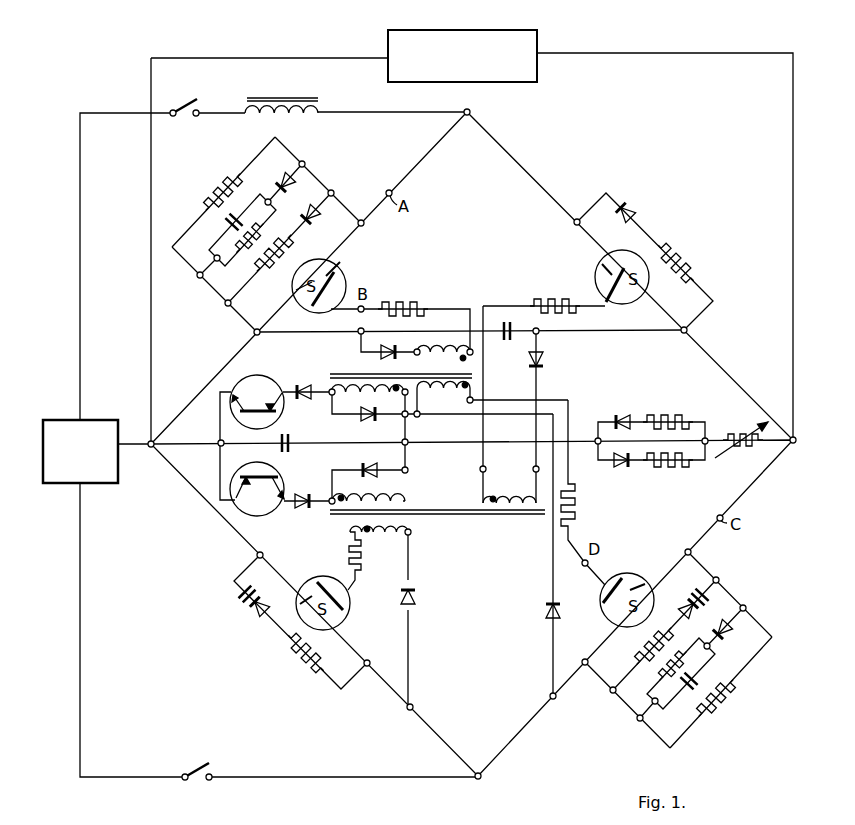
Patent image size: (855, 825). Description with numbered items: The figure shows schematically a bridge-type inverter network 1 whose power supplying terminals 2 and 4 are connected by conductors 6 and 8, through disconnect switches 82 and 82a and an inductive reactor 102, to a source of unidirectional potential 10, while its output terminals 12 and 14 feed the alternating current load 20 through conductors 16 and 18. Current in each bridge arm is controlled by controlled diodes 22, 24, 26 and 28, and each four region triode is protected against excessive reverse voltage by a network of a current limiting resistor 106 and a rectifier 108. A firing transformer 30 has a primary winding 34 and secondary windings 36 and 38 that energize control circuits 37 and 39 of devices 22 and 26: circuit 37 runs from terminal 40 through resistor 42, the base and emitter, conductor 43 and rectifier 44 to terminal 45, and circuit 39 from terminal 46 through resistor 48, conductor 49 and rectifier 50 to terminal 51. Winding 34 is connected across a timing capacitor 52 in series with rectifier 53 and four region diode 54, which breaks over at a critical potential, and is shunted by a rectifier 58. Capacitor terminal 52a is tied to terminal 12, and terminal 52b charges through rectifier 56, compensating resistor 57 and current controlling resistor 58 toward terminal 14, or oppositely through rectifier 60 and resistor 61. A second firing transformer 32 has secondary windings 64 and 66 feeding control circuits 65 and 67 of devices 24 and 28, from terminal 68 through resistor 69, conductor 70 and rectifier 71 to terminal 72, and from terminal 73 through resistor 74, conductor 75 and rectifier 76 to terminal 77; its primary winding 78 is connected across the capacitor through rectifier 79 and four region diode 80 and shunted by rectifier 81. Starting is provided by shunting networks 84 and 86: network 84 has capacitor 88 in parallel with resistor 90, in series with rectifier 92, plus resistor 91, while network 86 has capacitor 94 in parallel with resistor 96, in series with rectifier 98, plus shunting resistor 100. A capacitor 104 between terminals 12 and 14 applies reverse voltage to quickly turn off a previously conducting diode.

The bridge-type inverter network 1 is at (562, 168).
The power supplying terminal 2 is at (468, 111).
The power supplying terminal 4 is at (478, 776).
The conductor 6 is at (115, 114).
The conductor 8 is at (152, 777).
The source of unidirectional potential 10 is at (98, 419).
The output terminal 12 is at (152, 447).
The output terminal 14 is at (794, 443).
The conductor 16 is at (150, 210).
The conductor 18 is at (792, 208).
The alternating current load 20 is at (537, 53).
The controlled diode 22 is at (320, 308).
The controlled diode 24 is at (628, 310).
The controlled diode 26 is at (619, 566).
The controlled diode 28 is at (314, 583).
The firing transformer 30 is at (395, 359).
The firing transformer 32 is at (504, 514).
The primary winding 34 is at (362, 394).
The secondary winding 36 is at (481, 357).
The control circuit 37 is at (460, 299).
The secondary winding 38 is at (443, 397).
The control circuit 39 is at (608, 528).
The terminal of winding 36 40 is at (460, 350).
The current limiting resistor 42 is at (407, 300).
The conductor 43 is at (312, 332).
The rectifier 44 is at (379, 352).
The terminal of winding 36 45 is at (430, 341).
The terminal of winding 38 46 is at (470, 416).
The current limiting resistor 48 is at (573, 493).
The conductor 49 is at (552, 638).
The rectifier 50 is at (545, 608).
The terminal of winding 38 51 is at (416, 418).
The firing or timing capacitor 52 is at (290, 447).
The capacitor terminal 52a is at (218, 442).
The capacitor terminal 52b is at (407, 444).
The rectifier 53 is at (307, 400).
The four region diode 54 is at (270, 384).
The rectifier 56 is at (628, 417).
The compensating resistor 57 is at (666, 417).
The current controlling resistor 58 is at (359, 420).
The rectifier 60 is at (616, 465).
The compensating resistor 61 is at (660, 465).
The secondary winding 64 is at (481, 506).
The control circuit 65 is at (516, 299).
The secondary winding 66 is at (370, 554).
The control circuit 67 is at (335, 561).
The terminal of winding 64 68 is at (484, 470).
The current limiting resistor 69 is at (563, 298).
The conductor 70 is at (614, 331).
The rectifier 71 is at (543, 353).
The terminal of winding 64 72 is at (522, 484).
The terminal of winding 66 73 is at (349, 530).
The current limiting resistor 74 is at (358, 578).
The conductor 75 is at (410, 638).
The rectifier 76 is at (413, 591).
The terminal of winding 66 77 is at (410, 534).
The primary winding 78 is at (374, 501).
The rectifier 79 is at (308, 514).
The four region diode 80 is at (257, 498).
The rectifier 81 is at (363, 467).
The disconnect switch 82 is at (176, 110).
The disconnect switch 82a is at (202, 765).
The shunting network 84 is at (454, 407).
The shunting network 86 is at (683, 650).
The capacitor 88 is at (214, 223).
The resistor 90 is at (223, 279).
The resistor 91 is at (227, 180).
The rectifier 92 is at (287, 171).
The capacitor 94 is at (683, 697).
The resistor 96 is at (650, 682).
The rectifier 98 is at (723, 634).
The shunting resistor 100 is at (736, 686).
The inductive reactor 102 is at (283, 90).
The capacitor 104 is at (507, 337).
The current limiting resistor 106 is at (265, 279).
The rectifier 108 is at (318, 220).